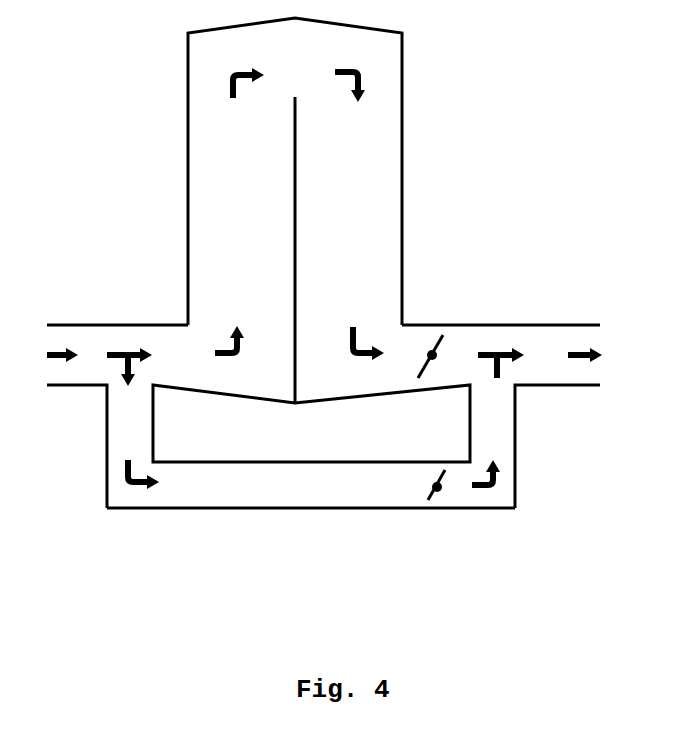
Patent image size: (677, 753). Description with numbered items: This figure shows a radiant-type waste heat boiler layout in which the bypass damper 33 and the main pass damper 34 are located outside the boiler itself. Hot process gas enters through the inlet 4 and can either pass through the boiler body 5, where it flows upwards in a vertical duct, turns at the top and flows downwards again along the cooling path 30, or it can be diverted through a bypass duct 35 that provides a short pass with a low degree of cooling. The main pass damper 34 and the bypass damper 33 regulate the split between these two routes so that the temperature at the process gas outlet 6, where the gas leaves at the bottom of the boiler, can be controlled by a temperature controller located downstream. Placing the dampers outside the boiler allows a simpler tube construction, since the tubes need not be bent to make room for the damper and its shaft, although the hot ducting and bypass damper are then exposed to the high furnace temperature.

The inlet 4 is at (106, 416).
The upper chamber 5 is at (306, 189).
The process gas outlet 6 is at (511, 416).
The flow passages 30 is at (287, 204).
The bypass damper 33 is at (437, 505).
The main pass damper 34 is at (311, 423).
The bypass chamber 35 is at (242, 514).